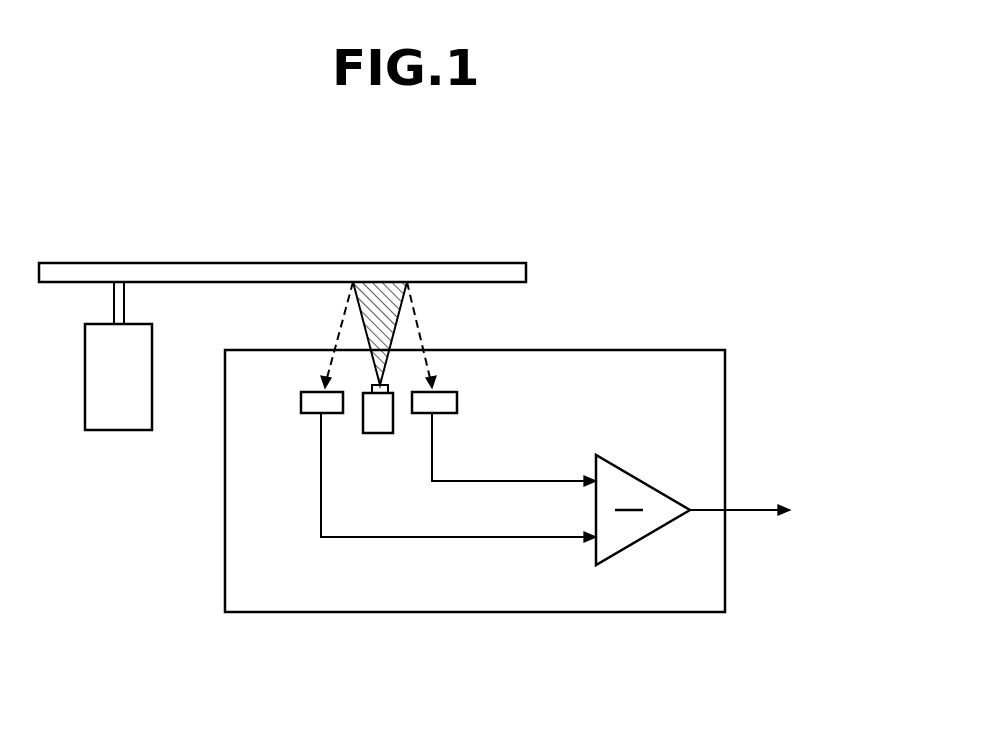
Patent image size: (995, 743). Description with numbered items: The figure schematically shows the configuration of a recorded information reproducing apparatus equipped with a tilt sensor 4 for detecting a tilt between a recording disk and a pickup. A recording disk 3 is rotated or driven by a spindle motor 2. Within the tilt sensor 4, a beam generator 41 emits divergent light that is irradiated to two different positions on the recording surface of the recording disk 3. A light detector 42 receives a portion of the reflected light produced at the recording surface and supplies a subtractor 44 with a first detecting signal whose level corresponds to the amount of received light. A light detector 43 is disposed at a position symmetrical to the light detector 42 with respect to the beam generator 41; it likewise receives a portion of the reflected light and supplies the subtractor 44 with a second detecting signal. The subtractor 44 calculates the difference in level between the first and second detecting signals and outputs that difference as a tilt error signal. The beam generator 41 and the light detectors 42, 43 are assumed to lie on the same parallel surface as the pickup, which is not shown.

The spindle motor 2 is at (102, 430).
The recording disk 3 is at (444, 262).
The tilt sensor 4 is at (303, 612).
The beam generator 41 is at (377, 433).
The light detector 42 is at (310, 415).
The light detector 43 is at (438, 415).
The subtractor 44 is at (642, 478).